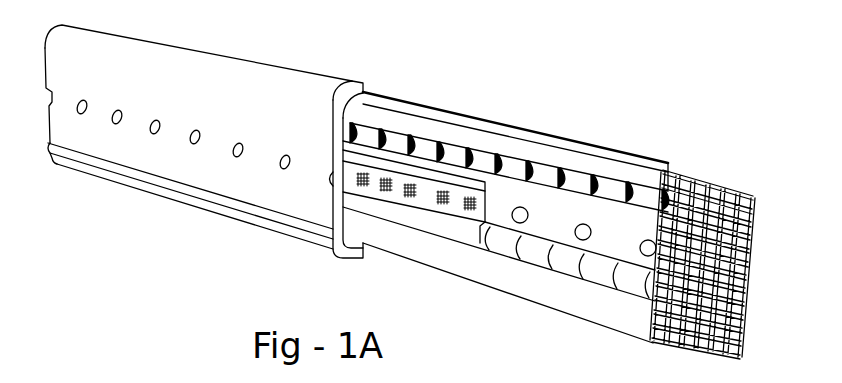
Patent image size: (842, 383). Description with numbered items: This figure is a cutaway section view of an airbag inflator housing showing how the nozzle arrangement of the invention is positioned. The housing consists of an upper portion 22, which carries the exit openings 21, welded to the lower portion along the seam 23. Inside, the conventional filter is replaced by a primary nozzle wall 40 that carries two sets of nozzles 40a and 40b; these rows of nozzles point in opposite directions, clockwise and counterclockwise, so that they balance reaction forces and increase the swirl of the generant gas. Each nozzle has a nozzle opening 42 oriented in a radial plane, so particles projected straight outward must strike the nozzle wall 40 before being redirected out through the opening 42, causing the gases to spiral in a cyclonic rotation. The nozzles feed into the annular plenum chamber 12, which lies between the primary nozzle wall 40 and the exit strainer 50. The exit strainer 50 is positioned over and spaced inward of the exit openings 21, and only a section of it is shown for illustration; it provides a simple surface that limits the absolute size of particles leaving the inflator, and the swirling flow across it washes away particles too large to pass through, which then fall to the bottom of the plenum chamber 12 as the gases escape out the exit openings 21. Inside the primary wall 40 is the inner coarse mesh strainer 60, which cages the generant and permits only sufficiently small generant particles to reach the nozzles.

The plenum chamber 12 is at (509, 191).
The exit openings 21 is at (155, 133).
The upper portion 22 is at (258, 187).
The seam 23 is at (98, 181).
The primary nozzle wall 40 is at (509, 191).
The nozzles (first set) 40a is at (509, 118).
The nozzles (second set) 40b is at (571, 263).
The nozzle openings 42 is at (567, 172).
The exit strainer 50 is at (427, 190).
The inner coarse mesh strainer 60 is at (717, 167).